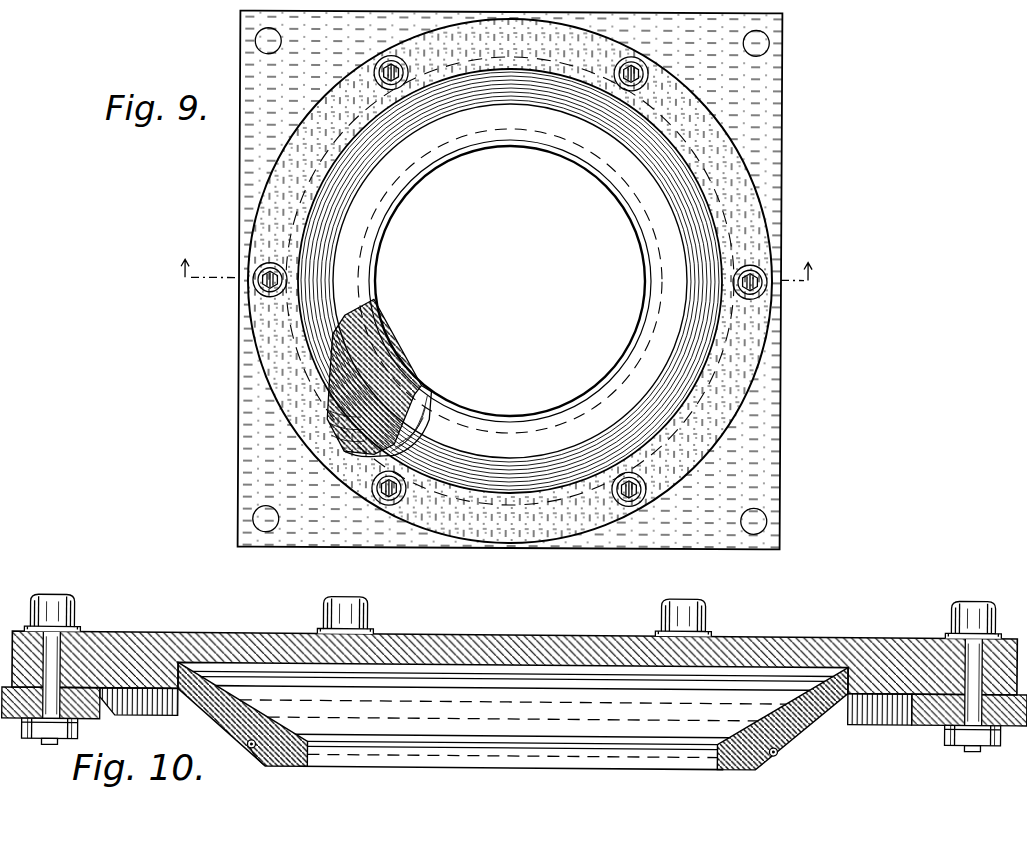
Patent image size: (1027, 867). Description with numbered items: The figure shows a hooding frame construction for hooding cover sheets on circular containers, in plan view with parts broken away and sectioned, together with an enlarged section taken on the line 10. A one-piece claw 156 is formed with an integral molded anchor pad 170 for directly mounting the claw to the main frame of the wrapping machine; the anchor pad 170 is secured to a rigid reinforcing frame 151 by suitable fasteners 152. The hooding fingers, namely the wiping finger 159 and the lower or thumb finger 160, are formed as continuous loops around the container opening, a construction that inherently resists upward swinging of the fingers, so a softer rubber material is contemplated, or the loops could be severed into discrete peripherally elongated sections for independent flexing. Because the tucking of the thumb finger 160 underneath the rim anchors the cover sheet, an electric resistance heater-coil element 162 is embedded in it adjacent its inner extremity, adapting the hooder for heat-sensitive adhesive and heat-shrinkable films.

In FIG. 9, the section line 10— 10 is at (504, 283).
In FIG. 9, the rigid reinforcing frame 151 is at (779, 413).
In FIG. 10, the rigid reinforcing frame 151 is at (919, 728).
In FIG. 9, the fasteners 152 is at (764, 276).
In FIG. 10, the fasteners 152 is at (48, 595).
In FIG. 9, the one-piece claw 156 is at (628, 214).
In FIG. 10, the one-piece claw 156 is at (827, 738).
In FIG. 9, the wiping finger 159 is at (368, 293).
In FIG. 10, the wiping finger 159 is at (280, 722).
In FIG. 9, the thumb finger 160 is at (372, 366).
In FIG. 10, the thumb finger 160 is at (266, 762).
In FIG. 10, the electric resistance heater-coil element 162 is at (376, 773).
In FIG. 9, the molded anchor pad 170 is at (510, 281).
In FIG. 10, the molded anchor pad 170 is at (918, 660).